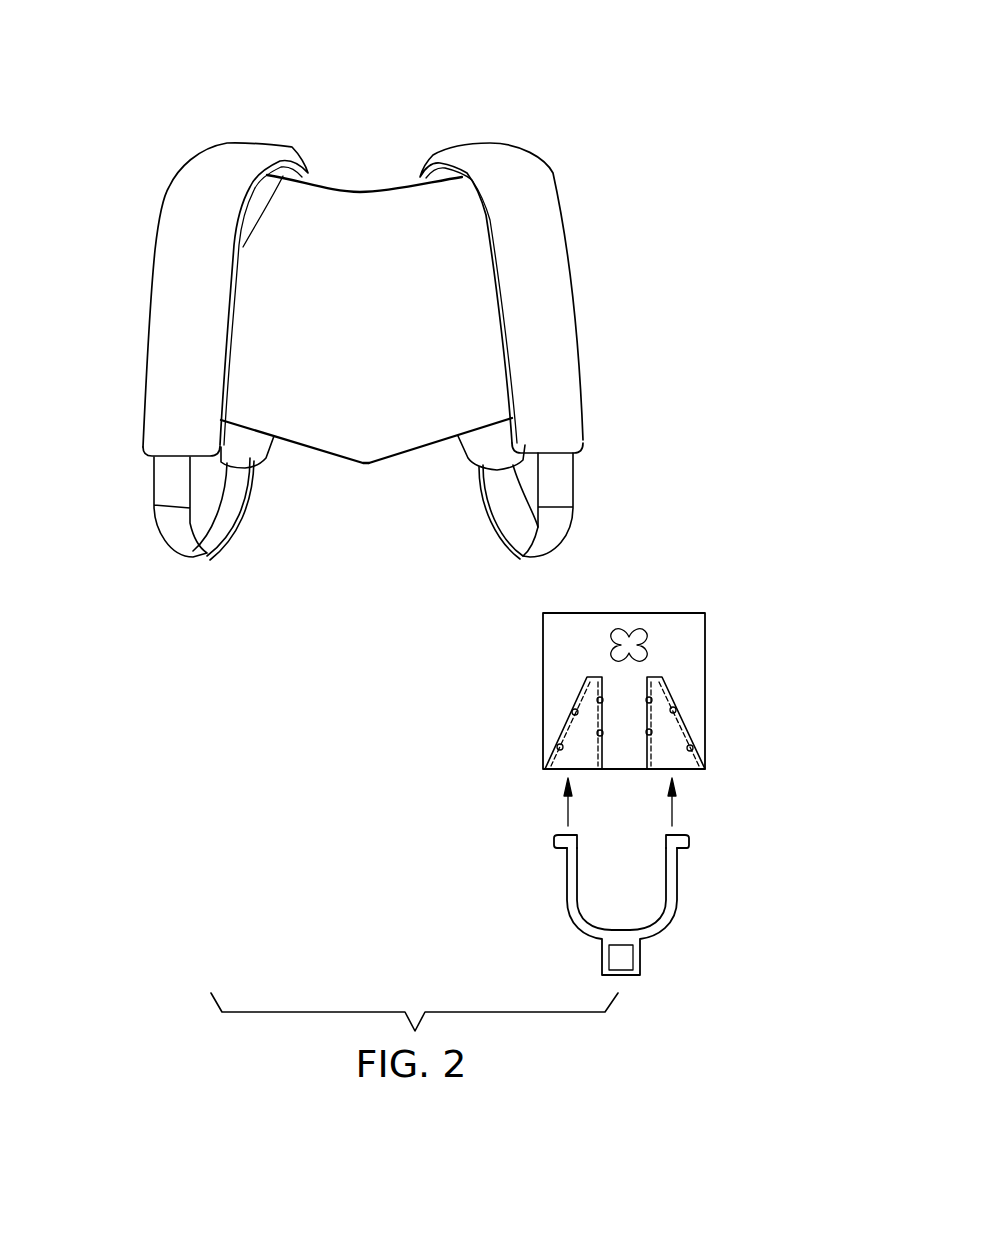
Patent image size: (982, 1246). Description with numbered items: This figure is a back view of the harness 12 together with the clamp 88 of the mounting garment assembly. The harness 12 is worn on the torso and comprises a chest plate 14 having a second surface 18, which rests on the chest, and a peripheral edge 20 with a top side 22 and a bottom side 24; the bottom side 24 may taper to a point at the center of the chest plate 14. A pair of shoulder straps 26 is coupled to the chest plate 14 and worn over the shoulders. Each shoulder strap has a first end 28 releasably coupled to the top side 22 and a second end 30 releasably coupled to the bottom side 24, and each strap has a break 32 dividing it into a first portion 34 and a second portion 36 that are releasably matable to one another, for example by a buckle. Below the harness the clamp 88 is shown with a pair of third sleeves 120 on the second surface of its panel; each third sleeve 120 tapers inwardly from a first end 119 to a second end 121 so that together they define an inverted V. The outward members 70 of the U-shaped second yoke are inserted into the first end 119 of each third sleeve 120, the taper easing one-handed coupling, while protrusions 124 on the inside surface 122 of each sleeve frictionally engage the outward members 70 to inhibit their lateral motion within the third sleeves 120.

The harness 12 is at (430, 116).
The chest plate 14 is at (356, 190).
The second surface 18 is at (301, 231).
The peripheral edge 20 is at (420, 447).
The top side 22 is at (412, 177).
The bottom side 24 is at (340, 466).
The shoulder straps 26 is at (209, 163).
The first end 28 is at (256, 242).
The second end 30 is at (243, 423).
The break 32 is at (141, 465).
The first portion 34 is at (158, 381).
The second portion 36 is at (203, 575).
The outward members 70 is at (567, 876).
The clamp 88 is at (683, 613).
The first end 119 is at (545, 773).
The third sleeves 120 is at (573, 712).
The second end 121 is at (587, 677).
The inside surface 122 is at (652, 760).
The protrusions 124 is at (652, 701).